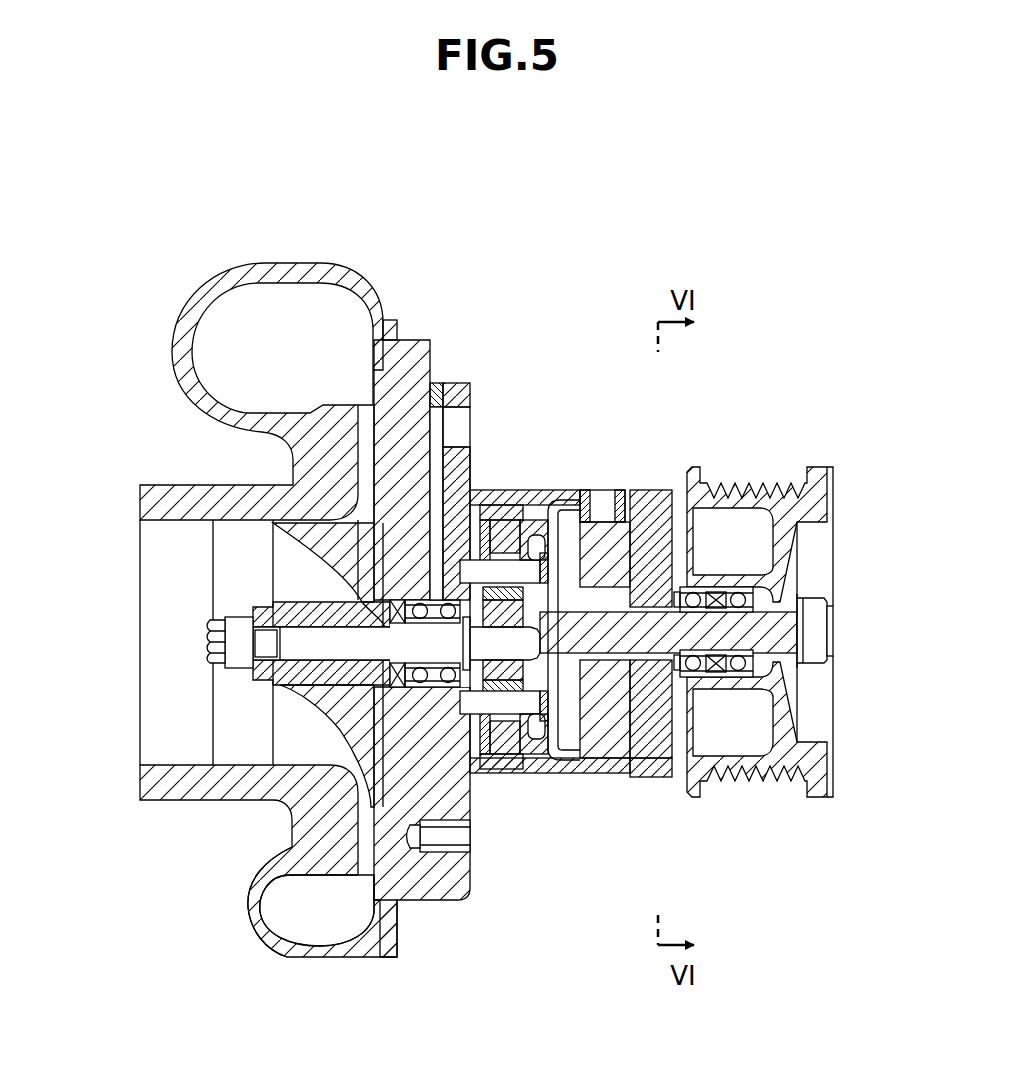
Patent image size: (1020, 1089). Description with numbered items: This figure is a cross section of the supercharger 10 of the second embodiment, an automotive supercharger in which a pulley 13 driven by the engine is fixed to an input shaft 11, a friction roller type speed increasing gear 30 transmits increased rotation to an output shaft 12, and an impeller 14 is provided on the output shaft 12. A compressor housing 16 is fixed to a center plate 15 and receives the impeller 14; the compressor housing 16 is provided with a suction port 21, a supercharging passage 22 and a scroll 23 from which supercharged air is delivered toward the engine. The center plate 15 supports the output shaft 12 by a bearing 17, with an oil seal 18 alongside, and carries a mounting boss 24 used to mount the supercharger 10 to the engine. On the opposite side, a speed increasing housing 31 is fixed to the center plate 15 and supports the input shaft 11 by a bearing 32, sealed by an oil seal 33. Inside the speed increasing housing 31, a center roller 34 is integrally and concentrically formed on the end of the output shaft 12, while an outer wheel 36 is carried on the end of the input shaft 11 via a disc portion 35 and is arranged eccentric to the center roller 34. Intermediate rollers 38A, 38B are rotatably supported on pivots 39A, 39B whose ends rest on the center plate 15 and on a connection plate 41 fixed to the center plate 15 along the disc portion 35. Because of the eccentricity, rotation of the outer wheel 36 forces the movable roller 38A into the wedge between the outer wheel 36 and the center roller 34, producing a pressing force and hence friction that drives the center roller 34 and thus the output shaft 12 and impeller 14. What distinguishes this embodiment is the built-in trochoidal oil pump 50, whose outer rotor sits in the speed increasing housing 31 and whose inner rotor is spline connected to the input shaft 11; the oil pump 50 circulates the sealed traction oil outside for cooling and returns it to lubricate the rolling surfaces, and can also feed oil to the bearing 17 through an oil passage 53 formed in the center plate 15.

The supercharger 10 is at (120, 236).
The input shaft 11 is at (768, 638).
The output shaft 12 is at (292, 650).
The pulley 13 is at (782, 703).
The impeller 14 is at (418, 680).
The center plate 15 is at (453, 883).
The compressor housing 16 is at (265, 922).
The bearing 17 is at (338, 702).
The oil seal 18 is at (305, 525).
The suction port 21 is at (232, 575).
The supercharging passage 22 is at (363, 858).
The scroll 23 is at (333, 917).
The mounting boss 24 is at (473, 858).
The speed increasing gear 30 is at (488, 448).
The speed increasing housing 31 is at (565, 773).
The bearing 32 is at (738, 668).
The oil seal 33 is at (718, 585).
The center roller 34 is at (487, 738).
The disc portion 35 is at (600, 490).
The outer wheel 36 is at (496, 522).
The intermediate roller 38A is at (503, 745).
The intermediate roller 38B is at (507, 547).
The pivot 39A is at (553, 745).
The pivot 39B is at (540, 538).
The connection plate 41 is at (560, 505).
The trochoidal oil pump 50 is at (651, 750).
The oil passage 53 is at (433, 427).